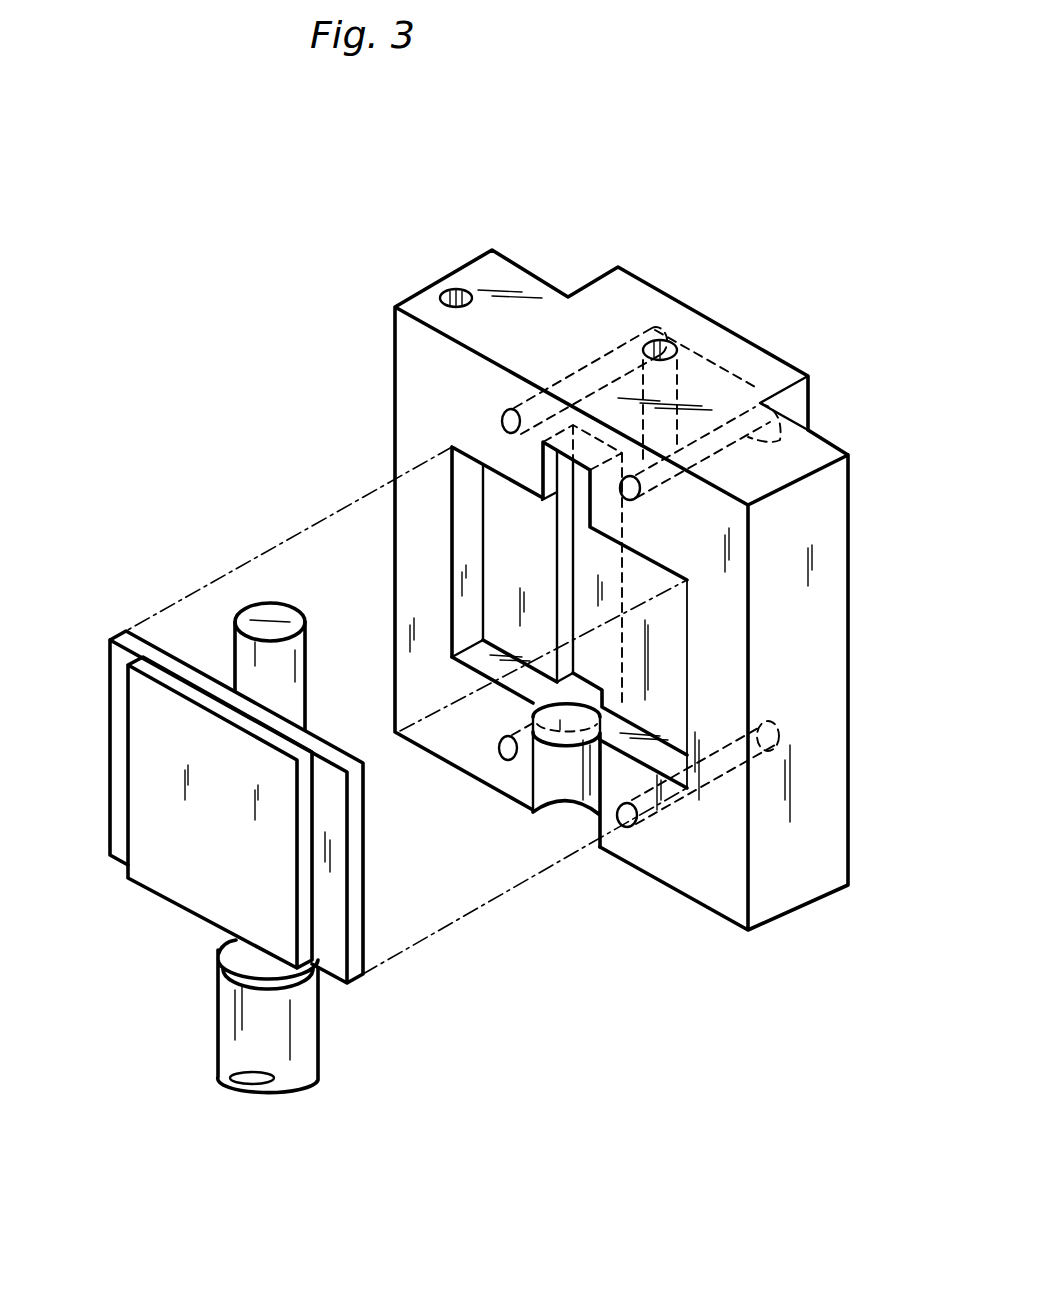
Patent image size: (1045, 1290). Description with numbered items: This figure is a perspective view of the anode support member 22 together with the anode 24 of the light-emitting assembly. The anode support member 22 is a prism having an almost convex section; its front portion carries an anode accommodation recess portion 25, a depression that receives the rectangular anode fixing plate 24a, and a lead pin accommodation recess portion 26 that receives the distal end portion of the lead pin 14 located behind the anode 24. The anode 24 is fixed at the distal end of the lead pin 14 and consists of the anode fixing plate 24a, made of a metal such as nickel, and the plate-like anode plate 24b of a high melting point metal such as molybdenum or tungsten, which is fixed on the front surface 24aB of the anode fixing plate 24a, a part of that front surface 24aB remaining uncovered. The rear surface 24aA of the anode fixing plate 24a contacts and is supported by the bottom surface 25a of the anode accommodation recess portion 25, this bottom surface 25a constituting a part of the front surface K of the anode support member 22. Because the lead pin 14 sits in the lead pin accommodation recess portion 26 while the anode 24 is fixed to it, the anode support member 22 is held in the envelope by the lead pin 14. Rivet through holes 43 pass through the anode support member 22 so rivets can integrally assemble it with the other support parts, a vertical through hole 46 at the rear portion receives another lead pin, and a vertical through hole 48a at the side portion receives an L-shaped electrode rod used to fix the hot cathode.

The lead pin 14 is at (288, 662).
The anode support member 22 is at (753, 373).
The anode 24 is at (301, 842).
The anode fixing plate 24a is at (363, 974).
The rear surface of the anode fixing plate 24aA is at (357, 745).
The front surface of the anode fixing plate 24aB is at (330, 962).
The anode plate 24b is at (175, 875).
The anode accommodation recess portion 25 is at (680, 640).
The bottom surface of the anode accommodation recess portion 25a is at (657, 663).
The lead pin accommodation recess portion 26 is at (592, 563).
The rivet through hole 43 is at (593, 352).
The vertical through hole 46 is at (668, 344).
The vertical through hole 48a is at (450, 291).
The front surface of the anode support member K is at (415, 550).